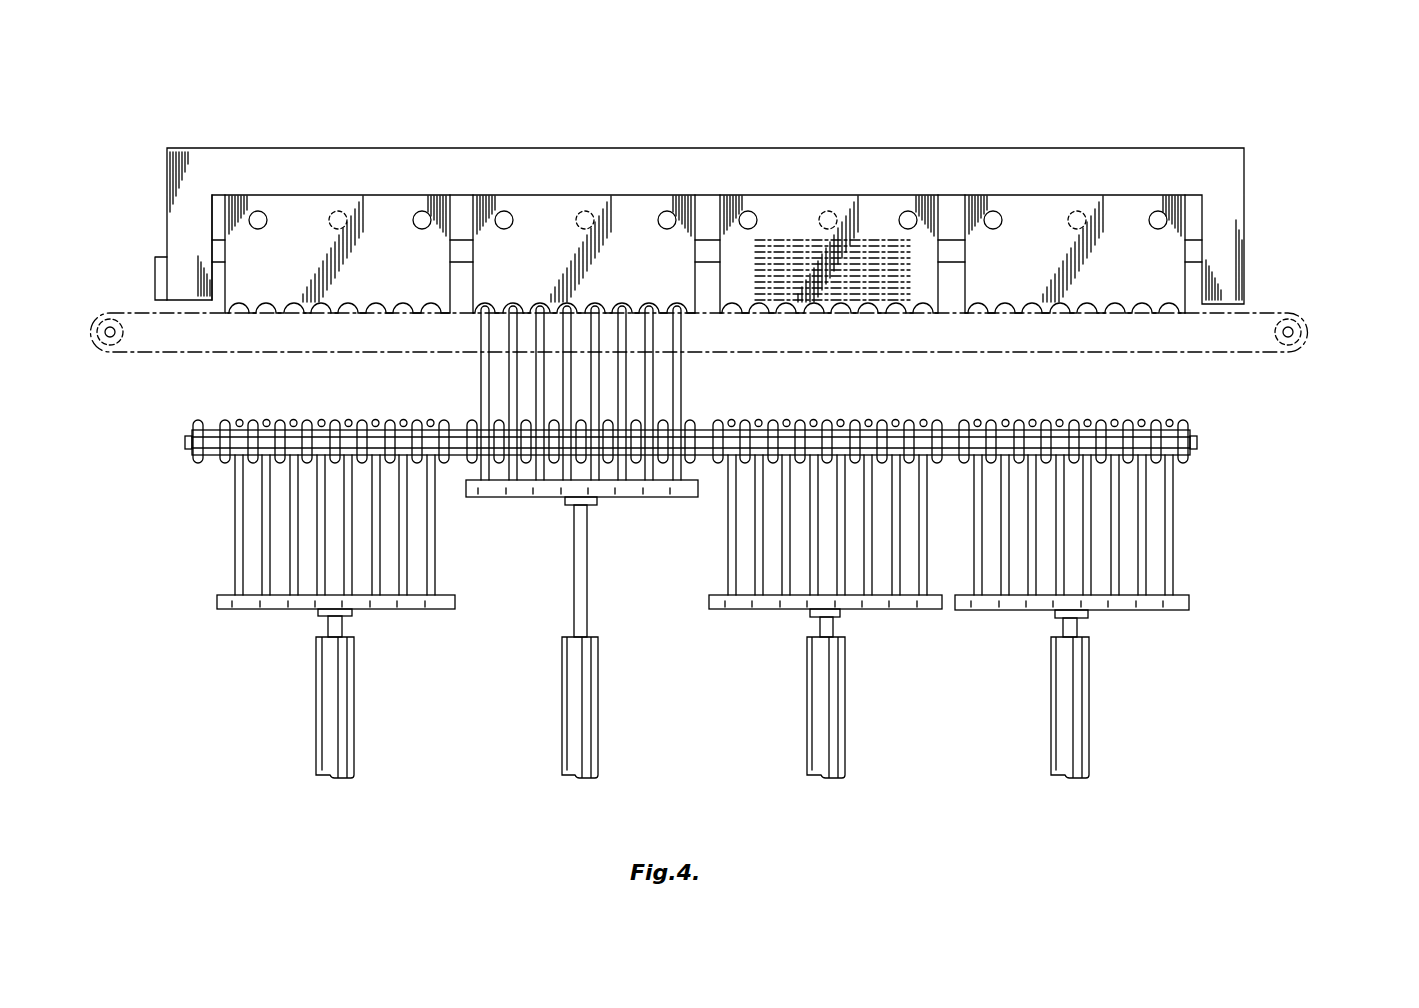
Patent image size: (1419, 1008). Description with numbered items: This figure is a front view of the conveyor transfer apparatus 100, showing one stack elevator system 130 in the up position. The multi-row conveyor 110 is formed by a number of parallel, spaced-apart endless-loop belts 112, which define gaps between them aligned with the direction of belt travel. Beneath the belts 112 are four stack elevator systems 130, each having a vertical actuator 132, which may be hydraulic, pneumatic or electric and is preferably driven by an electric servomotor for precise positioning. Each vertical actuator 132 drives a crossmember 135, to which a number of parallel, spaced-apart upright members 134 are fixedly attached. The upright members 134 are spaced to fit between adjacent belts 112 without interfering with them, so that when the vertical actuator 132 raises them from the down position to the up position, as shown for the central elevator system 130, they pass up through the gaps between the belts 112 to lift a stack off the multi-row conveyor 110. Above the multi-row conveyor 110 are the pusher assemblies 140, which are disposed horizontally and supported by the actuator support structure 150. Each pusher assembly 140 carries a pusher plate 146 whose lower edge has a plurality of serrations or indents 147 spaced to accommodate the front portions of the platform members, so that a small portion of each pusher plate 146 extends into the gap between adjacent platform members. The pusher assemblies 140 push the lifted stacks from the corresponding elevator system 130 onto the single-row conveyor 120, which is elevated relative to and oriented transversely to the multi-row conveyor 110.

The conveyor transfer apparatus 100 is at (1312, 143).
The multi-row conveyor 110 is at (719, 554).
The endless-loop belts 112 is at (1153, 428).
The single-row conveyor 120 is at (1275, 314).
The stack elevator system 130 is at (695, 554).
The vertical actuator 132 is at (322, 678).
The upright members 134 is at (293, 497).
The crossmember 135 is at (222, 596).
The pusher assembly 140 is at (396, 260).
The pusher plate 146 is at (224, 212).
The serrations or indents 147 is at (1117, 316).
The actuator support structure 150 is at (1207, 150).